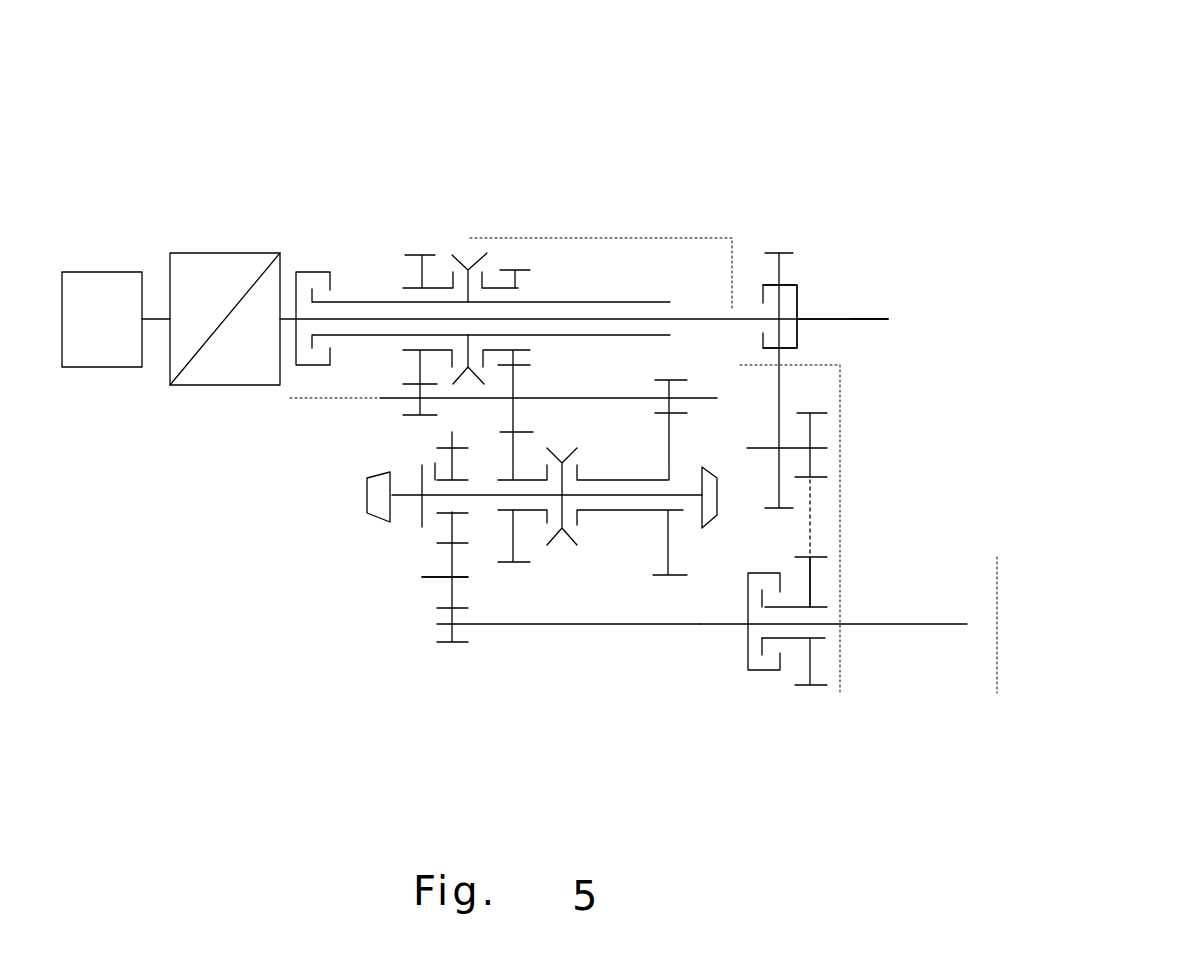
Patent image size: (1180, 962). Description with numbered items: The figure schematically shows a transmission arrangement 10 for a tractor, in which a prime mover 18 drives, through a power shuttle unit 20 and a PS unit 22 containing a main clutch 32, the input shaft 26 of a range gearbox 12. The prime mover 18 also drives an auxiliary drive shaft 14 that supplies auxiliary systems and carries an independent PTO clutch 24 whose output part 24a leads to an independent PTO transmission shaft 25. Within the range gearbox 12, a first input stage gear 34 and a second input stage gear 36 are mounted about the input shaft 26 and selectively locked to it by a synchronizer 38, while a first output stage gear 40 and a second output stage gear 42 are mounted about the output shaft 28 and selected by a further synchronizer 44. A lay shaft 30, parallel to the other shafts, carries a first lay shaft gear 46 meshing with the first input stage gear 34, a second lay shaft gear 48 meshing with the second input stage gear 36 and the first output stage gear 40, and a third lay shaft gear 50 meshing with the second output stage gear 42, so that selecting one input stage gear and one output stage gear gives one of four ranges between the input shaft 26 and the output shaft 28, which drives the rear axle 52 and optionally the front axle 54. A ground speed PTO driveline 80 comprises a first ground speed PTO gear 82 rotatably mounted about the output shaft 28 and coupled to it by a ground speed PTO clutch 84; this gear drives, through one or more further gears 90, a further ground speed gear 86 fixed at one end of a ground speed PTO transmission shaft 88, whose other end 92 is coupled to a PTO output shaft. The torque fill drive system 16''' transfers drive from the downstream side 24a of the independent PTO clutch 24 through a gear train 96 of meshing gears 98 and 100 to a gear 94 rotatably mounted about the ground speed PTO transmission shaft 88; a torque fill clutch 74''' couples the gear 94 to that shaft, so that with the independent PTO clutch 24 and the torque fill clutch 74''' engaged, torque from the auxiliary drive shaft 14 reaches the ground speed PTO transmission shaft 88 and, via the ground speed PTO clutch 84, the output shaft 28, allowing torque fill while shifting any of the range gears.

The drive train 10 is at (862, 124).
The range gearbox 12 is at (340, 483).
The auxiliary drive shaft 14 is at (378, 320).
The torque fill drive system 16''' is at (911, 484).
The prime mover 18 is at (116, 319).
The power shuttle unit 20 is at (225, 319).
The PS unit 22 is at (225, 319).
The independent PTO clutch 24 is at (798, 285).
The output part of independent PTO clutch 24a is at (798, 302).
The independent PTO transmission shaft 25 is at (878, 315).
The input shaft 26 is at (352, 300).
The output shaft 28 is at (680, 492).
The lay shaft 30 is at (577, 397).
The main clutch 32 is at (302, 367).
The first input stage gear 34 is at (417, 253).
The second input stage gear 36 is at (512, 270).
The synchronizer 38 is at (468, 268).
The first output stage gear 40 is at (512, 567).
The second output stage gear 42 is at (657, 575).
The further synchronizer 44 is at (558, 535).
The first lay shaft gear 46 is at (420, 407).
The second lay shaft gear 48 is at (515, 387).
The third lay shaft gear 50 is at (665, 380).
The rear axle 52 is at (890, 462).
The front axle 54 is at (382, 510).
The torque fill clutch 74''' is at (779, 676).
The ground speed PTO driveline 80 is at (410, 692).
The first ground speed PTO gear 82 is at (533, 432).
The ground speed PTO clutch 84 is at (422, 522).
The further ground speed gear 86 is at (447, 640).
The ground speed PTO transmission shaft 88 is at (568, 625).
The further gears 90 is at (412, 597).
The other end of ground speed PTO transmission shaft 92 is at (930, 623).
The gear 94 is at (810, 575).
The gear train 96 is at (858, 462).
The meshing gear 98 is at (783, 246).
The meshing gear 100 is at (812, 432).